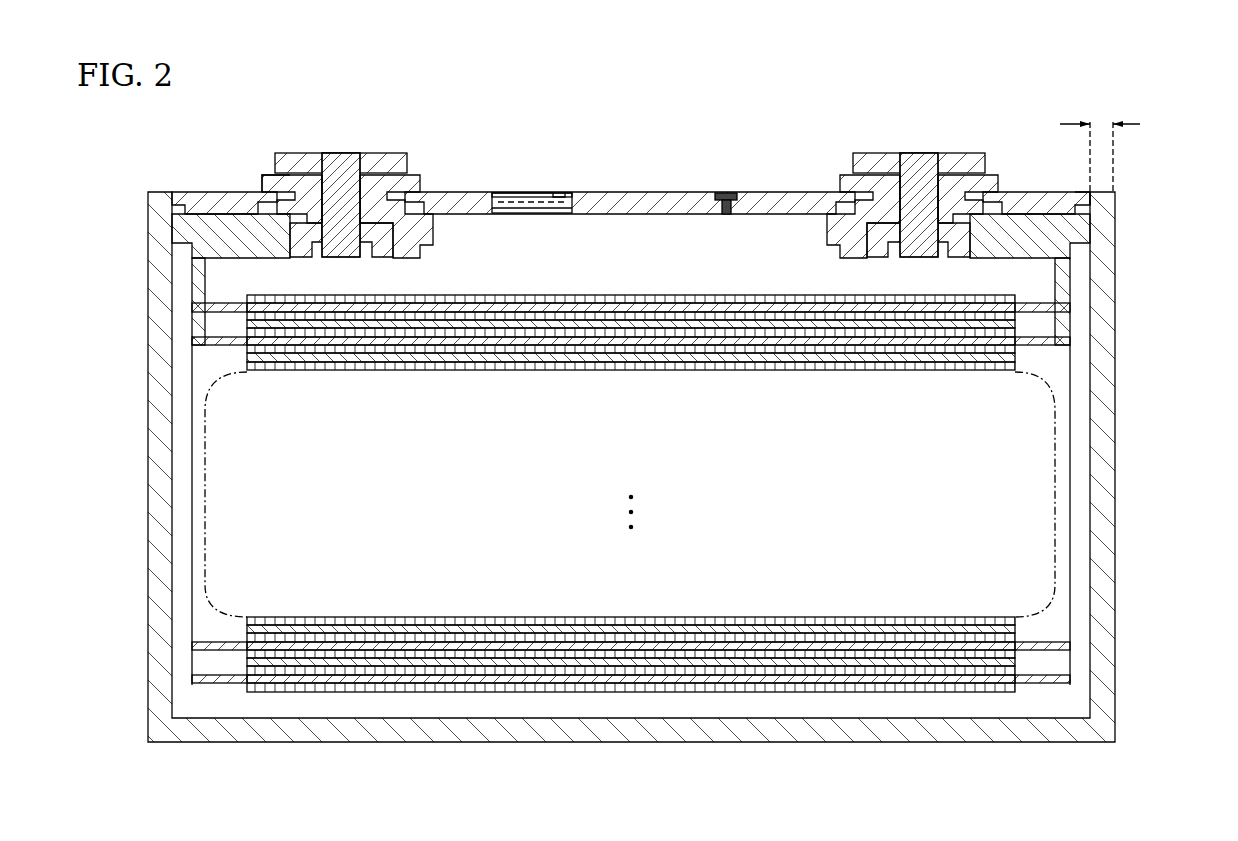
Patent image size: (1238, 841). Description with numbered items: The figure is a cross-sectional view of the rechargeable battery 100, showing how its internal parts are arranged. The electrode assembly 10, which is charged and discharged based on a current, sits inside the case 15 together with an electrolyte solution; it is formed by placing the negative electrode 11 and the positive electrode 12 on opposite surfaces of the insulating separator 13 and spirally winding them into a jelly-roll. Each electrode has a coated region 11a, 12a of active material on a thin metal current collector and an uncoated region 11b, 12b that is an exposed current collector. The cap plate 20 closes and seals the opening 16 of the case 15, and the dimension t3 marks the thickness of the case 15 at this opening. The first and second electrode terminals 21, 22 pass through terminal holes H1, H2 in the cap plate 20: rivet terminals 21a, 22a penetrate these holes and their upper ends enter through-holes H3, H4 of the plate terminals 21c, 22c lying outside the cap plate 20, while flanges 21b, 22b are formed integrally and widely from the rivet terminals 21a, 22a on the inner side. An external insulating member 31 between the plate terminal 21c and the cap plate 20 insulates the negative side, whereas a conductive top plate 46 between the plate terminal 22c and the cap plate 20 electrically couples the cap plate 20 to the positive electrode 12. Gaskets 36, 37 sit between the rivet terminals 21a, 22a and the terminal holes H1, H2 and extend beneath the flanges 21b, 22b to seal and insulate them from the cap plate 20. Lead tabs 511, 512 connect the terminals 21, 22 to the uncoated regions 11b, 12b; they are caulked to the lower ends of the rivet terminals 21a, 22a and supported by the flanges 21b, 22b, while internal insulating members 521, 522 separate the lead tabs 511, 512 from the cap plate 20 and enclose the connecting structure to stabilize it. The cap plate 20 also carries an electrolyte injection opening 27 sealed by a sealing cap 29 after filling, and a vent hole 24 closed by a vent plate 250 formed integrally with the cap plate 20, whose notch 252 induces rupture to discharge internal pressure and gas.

The rechargeable battery 100 is at (618, 85).
The electrode assembly 10 is at (631, 561).
The negative electrode 11 is at (603, 565).
The coated region 11a is at (333, 684).
The uncoated region 11b is at (222, 549).
The positive electrode 12 is at (658, 565).
The coated region 12a is at (935, 664).
The uncoated region 12b is at (1042, 549).
The separator 13 is at (675, 690).
The case 15 is at (1105, 357).
The opening 16 is at (1082, 191).
The cap plate 20 is at (778, 200).
The first electrode terminal 21 is at (336, 258).
The rivet terminal 21a is at (344, 258).
The flange 21b is at (382, 258).
The plate terminal 21c is at (395, 165).
The second electrode terminal 22 is at (918, 260).
The rivet terminal 22a is at (920, 258).
The flange 22b is at (887, 258).
The plate terminal 22c is at (970, 163).
The vent hole 24 is at (549, 200).
The vent plate 250 is at (514, 192).
The notch 252 is at (560, 192).
The electrolyte injection opening 27 is at (726, 214).
The sealing cap 29 is at (726, 193).
The external insulating member 31 is at (270, 182).
The gasket 36 is at (302, 182).
The gasket 37 is at (962, 188).
The conductive top plate 46 is at (845, 180).
The lead tab 511 is at (200, 283).
The lead tab 512 is at (1066, 292).
The internal insulating member 521 is at (188, 228).
The internal insulating member 522 is at (1082, 230).
The terminal hole H1 is at (363, 197).
The terminal hole H2 is at (897, 190).
The through-hole H3 is at (328, 187).
The through-hole H4 is at (938, 190).
The thickness t3 is at (1100, 145).